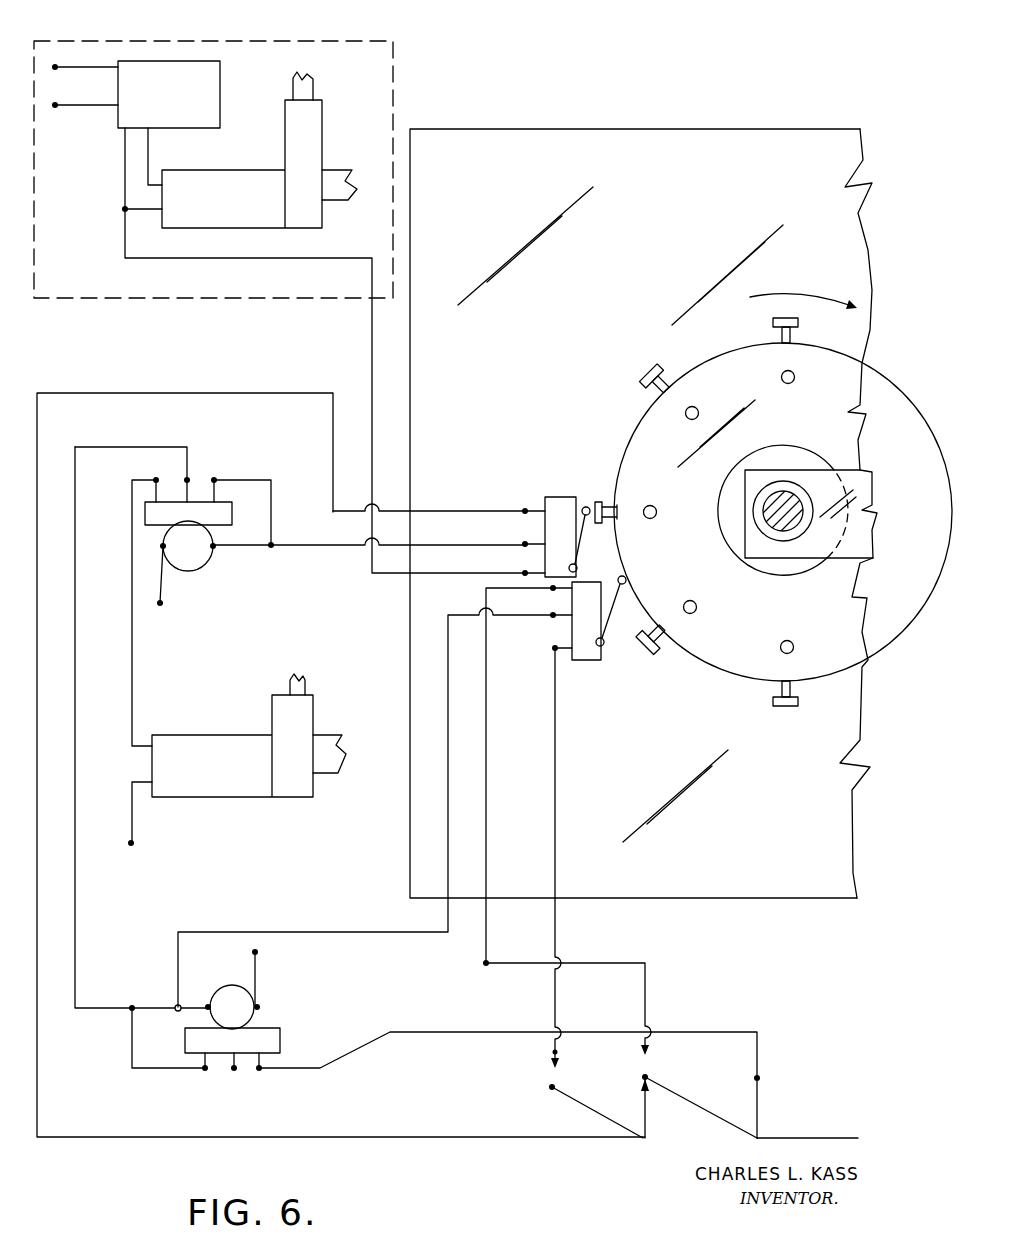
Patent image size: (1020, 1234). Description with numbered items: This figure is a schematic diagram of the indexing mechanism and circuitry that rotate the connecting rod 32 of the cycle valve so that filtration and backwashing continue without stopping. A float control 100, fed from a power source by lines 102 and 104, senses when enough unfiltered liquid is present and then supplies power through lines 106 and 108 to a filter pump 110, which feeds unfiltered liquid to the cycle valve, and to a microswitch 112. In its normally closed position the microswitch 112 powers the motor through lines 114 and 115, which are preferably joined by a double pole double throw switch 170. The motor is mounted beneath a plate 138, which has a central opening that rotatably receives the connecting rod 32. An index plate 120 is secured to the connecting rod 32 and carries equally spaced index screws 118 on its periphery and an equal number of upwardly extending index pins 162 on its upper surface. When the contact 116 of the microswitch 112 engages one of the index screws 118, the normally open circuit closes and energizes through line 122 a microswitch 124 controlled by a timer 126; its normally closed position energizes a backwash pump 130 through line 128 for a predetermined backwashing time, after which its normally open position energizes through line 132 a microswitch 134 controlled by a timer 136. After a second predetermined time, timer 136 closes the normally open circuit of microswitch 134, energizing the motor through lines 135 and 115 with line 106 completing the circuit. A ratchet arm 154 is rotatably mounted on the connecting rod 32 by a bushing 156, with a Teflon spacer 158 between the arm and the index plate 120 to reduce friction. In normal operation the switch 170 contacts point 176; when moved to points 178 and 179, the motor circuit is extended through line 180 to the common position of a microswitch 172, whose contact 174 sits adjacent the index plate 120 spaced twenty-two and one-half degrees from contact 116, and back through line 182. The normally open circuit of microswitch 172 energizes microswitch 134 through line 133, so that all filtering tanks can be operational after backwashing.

The connecting rod 32 is at (770, 502).
The float control 100 is at (212, 98).
The line 102 is at (80, 67).
The line 104 is at (109, 105).
The line 106 is at (149, 157).
The line 108 is at (123, 197).
The filter pump 110 is at (238, 176).
The microswitch 112 is at (553, 500).
The line 114 is at (160, 362).
The line 115 is at (847, 1117).
The contact 116 is at (586, 506).
The index screws 118 is at (787, 320).
The index plate 120 is at (658, 424).
The line 122 is at (299, 544).
The microswitch 124 is at (198, 502).
The timer 126 is at (195, 568).
The line 128 is at (133, 680).
The backwash pump 130 is at (185, 740).
The line 132 is at (76, 946).
The line 133 is at (446, 649).
The microswitch 134 is at (272, 1053).
The line 135 is at (425, 1034).
The timer 136 is at (248, 1014).
The plate 138 is at (733, 146).
The ratchet arm 154 is at (807, 475).
The bushing 156 is at (783, 480).
The spacer 158 is at (770, 562).
The index pins 162 is at (794, 377).
The double pole double throw switch 170 is at (543, 1149).
The microswitch 172 is at (582, 660).
The contact 174 is at (626, 578).
The point 176 is at (650, 1083).
The point 178 is at (552, 1064).
The point 179 is at (648, 1051).
The line 180 is at (556, 787).
The line 182 is at (515, 746).